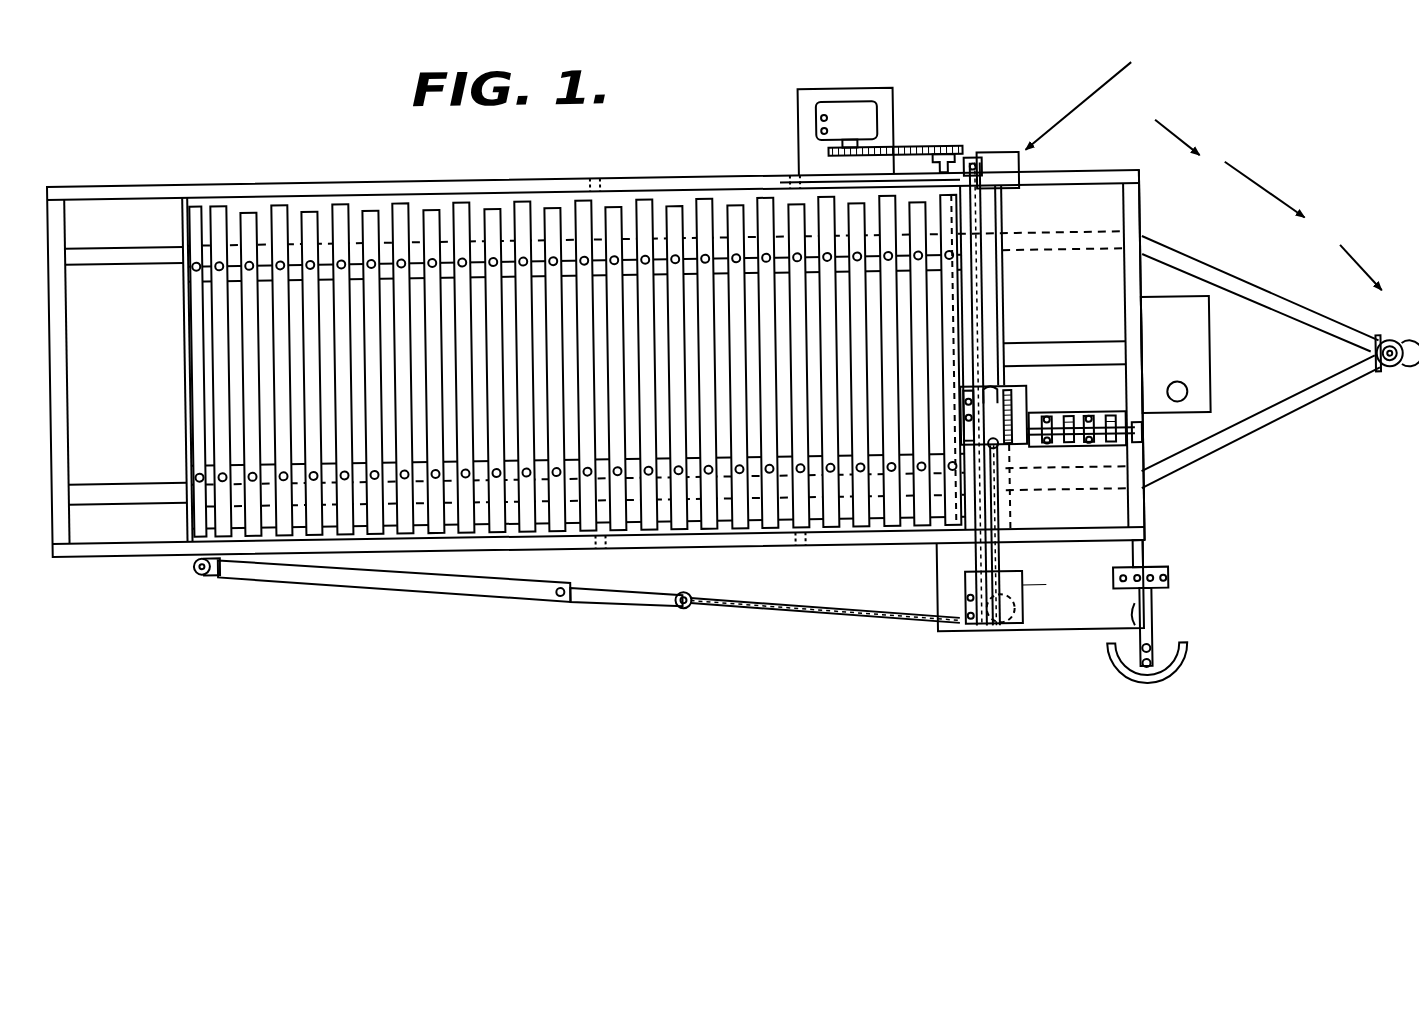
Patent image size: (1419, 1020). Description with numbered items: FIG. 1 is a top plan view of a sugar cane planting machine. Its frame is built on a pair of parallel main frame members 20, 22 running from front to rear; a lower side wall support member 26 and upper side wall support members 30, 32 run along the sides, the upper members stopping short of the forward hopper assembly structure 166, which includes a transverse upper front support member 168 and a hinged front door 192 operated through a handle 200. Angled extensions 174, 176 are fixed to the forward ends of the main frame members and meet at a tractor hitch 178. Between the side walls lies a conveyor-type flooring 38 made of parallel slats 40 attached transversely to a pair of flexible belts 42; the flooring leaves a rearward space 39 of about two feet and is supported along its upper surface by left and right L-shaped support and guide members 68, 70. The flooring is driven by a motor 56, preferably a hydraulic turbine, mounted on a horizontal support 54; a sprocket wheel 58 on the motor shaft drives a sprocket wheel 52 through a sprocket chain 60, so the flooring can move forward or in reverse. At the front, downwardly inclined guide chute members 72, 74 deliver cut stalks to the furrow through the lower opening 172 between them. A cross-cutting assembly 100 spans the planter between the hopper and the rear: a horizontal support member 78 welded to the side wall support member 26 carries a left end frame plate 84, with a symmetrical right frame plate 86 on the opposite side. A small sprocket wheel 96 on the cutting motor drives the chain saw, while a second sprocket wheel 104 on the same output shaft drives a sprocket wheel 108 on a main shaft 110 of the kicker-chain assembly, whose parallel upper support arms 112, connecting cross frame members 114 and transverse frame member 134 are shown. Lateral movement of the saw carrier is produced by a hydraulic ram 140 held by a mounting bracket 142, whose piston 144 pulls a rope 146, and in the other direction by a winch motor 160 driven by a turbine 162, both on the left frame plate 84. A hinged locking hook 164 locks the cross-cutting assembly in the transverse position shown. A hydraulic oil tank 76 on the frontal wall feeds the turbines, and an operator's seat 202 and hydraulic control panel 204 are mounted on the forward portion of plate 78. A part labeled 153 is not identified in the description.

The main frame member 20 is at (100, 506).
The main frame member 22 is at (88, 266).
The lower side wall support member 26 is at (1040, 583).
The upper side wall support member 30 is at (128, 560).
The upper side wall support member 32 is at (125, 189).
The conveyor-type flooring 38 is at (156, 422).
The rearward space 39 is at (105, 166).
The slats 40 is at (245, 212).
The flexible belts 42 is at (540, 258).
The sprocket wheel 52 is at (930, 161).
The horizontal support 54 is at (800, 140).
The motor 56 is at (843, 127).
The sprocket wheel 58 is at (798, 175).
The sprocket chain 60 is at (898, 160).
The L-shaped support and guide member 68 is at (606, 557).
The L-shaped support and guide member 70 is at (600, 197).
The guide chute member 72 is at (1089, 540).
The guide chute member 74 is at (1062, 313).
The hydraulic oil tank 76 is at (1209, 358).
The horizontal support member 78 is at (1071, 656).
The left end frame plate 84 is at (1003, 650).
The right frame plate 86 is at (1021, 183).
The small sprocket wheel 96 is at (988, 410).
The cross-cutting assembly 100 is at (1101, 97).
The second sprocket wheel 104 is at (1017, 413).
The sprocket wheel 108 is at (1008, 477).
The main shaft 110 is at (1096, 474).
The upper support arms 112 is at (1082, 428).
The cross frame members 114 is at (1052, 463).
The transverse frame member 134 is at (1141, 457).
The hydraulic ram 140 is at (395, 593).
The mounting bracket 142 is at (200, 580).
The piston 144 is at (623, 609).
The rope 146 is at (814, 624).
The pin 153 is at (1031, 155).
The winch motor 160 is at (954, 613).
The turbine 162 is at (984, 640).
The hinged locking hook 164 is at (972, 182).
The forward hopper assembly structure 166 is at (1190, 531).
The transverse upper front support member 168 is at (1140, 235).
The lower opening 172 is at (1084, 382).
The angled extension 174 is at (1287, 434).
The angled extension 176 is at (1249, 309).
The tractor hitch 178 is at (1386, 390).
The front door 192 is at (1123, 235).
The handle 200 is at (1145, 565).
The operator's seat 202 is at (1182, 708).
The hydraulic control panel 204 is at (1164, 597).